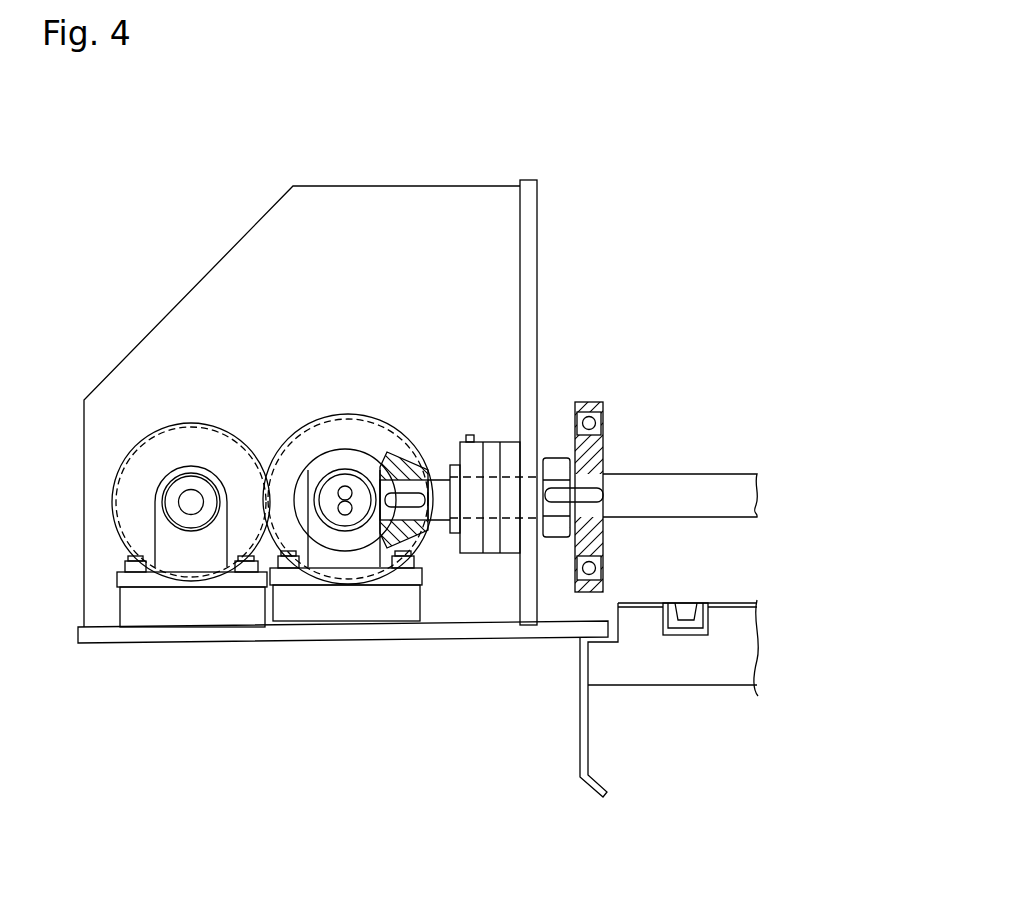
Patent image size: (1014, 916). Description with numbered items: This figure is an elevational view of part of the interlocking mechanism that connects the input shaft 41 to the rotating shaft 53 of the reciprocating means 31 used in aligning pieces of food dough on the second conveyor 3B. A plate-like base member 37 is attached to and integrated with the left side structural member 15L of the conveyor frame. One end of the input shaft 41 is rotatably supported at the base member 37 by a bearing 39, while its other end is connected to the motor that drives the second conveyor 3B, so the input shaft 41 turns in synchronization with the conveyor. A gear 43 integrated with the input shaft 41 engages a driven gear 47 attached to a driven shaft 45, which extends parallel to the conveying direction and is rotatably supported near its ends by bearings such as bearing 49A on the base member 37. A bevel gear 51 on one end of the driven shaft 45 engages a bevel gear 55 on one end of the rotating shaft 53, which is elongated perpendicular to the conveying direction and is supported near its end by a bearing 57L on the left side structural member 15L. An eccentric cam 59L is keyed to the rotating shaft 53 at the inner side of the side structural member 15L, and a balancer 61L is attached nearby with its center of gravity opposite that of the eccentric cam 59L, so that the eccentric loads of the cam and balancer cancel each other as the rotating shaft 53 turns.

The left side structural member 15L is at (530, 308).
The reciprocating means 31 is at (628, 410).
The base member 37 is at (328, 632).
The bearing 39 is at (140, 582).
The second conveyor 3B is at (718, 595).
The input shaft 41 is at (186, 497).
The gear 43 is at (120, 471).
The driven shaft 45 is at (345, 517).
The driven gear 47 is at (297, 447).
The bearing 49A is at (385, 580).
The bevel gear 51 is at (343, 457).
The rotating shaft 53 is at (733, 476).
The bevel gear 55 is at (408, 450).
The bearing 57L is at (473, 548).
The eccentric cam 59L is at (603, 447).
The balancer 61L is at (548, 457).